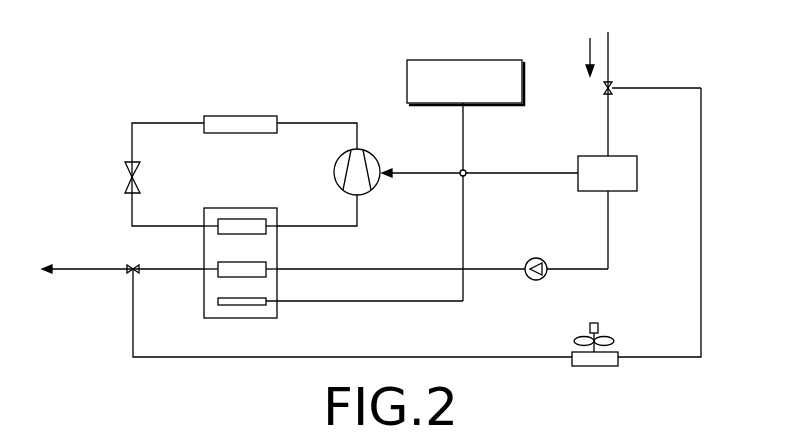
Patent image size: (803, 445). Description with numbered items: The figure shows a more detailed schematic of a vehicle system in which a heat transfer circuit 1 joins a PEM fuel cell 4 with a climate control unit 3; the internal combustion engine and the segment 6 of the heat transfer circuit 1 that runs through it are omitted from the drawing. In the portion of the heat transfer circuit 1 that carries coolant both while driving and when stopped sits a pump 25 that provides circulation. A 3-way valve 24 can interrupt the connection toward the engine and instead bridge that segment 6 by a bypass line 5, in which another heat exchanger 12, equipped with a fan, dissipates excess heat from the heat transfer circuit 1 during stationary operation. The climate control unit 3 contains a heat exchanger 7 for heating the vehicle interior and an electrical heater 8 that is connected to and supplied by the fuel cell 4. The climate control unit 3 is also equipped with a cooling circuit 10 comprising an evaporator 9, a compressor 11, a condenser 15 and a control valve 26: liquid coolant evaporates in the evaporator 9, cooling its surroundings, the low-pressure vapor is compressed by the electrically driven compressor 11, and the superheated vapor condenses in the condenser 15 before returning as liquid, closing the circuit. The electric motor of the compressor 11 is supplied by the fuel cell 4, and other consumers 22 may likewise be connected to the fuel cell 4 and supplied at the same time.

The heat transfer circuit 1 is at (612, 238).
The climate control unit 3 is at (262, 208).
The PEM fuel cell 4 is at (640, 173).
The bypass line 5 is at (499, 358).
The segment of the heat transfer circuit 6 is at (88, 269).
The heat exchanger 7 is at (268, 262).
The electrical heater 8 is at (233, 305).
The evaporator 9 is at (233, 219).
The cooling circuit 10 is at (183, 104).
The compressor 11 is at (375, 157).
The heat exchanger 12 is at (594, 367).
The condenser 15 is at (255, 116).
The consumers 22 is at (463, 60).
The 3-way valve 24 is at (130, 274).
The pump 25 is at (540, 258).
The control valve 26 is at (125, 174).